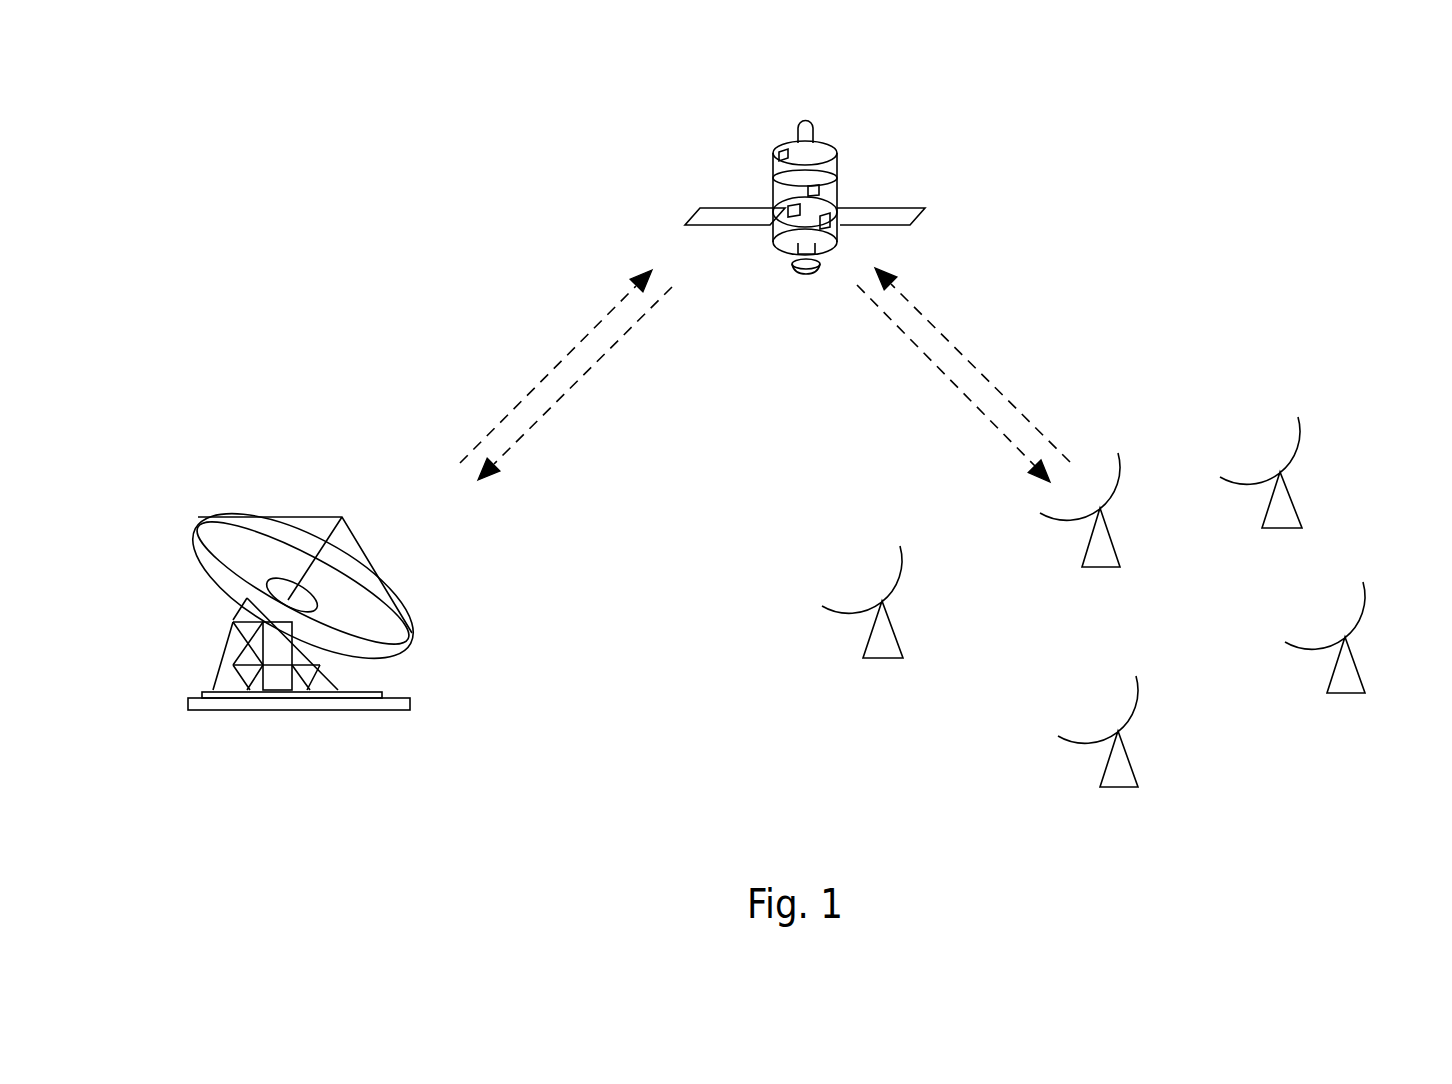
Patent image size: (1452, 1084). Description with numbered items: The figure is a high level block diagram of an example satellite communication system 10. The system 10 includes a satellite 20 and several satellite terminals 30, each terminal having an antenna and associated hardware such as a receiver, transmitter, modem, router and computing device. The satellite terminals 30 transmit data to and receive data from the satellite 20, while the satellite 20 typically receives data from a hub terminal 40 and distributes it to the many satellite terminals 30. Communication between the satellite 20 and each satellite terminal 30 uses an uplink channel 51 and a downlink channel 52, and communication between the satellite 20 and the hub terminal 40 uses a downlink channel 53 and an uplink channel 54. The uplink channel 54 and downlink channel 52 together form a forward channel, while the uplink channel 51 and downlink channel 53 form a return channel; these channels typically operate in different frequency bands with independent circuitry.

The satellite communication system 10 is at (608, 135).
The satellite 20 is at (837, 153).
The satellite terminal 30 is at (1112, 548).
The hub terminal 40 is at (400, 692).
The uplink channel 51 is at (972, 367).
The downlink channel 52 is at (952, 382).
The downlink channel 53 is at (577, 383).
The uplink channel 54 is at (557, 367).